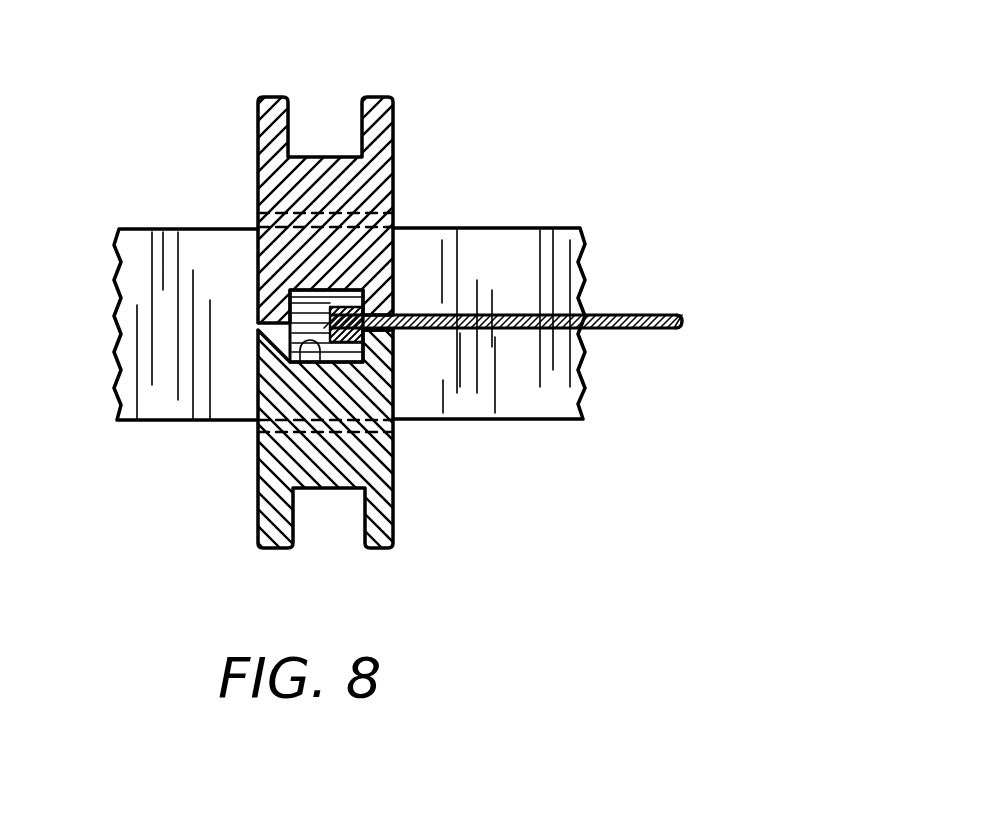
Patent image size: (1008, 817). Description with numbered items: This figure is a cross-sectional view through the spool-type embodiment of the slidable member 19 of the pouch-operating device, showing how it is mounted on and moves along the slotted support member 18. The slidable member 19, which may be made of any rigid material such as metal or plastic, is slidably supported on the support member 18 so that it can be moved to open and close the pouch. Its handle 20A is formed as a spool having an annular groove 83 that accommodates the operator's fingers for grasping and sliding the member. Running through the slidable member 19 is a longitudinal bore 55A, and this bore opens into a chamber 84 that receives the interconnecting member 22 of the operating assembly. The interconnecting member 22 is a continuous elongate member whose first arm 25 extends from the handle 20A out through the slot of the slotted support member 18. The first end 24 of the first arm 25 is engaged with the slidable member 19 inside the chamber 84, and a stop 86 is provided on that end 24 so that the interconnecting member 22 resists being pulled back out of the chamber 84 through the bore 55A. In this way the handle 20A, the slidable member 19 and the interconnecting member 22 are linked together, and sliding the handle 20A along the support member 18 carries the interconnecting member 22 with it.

The slotted support member 18 is at (552, 420).
The slidable member 19 is at (278, 188).
The handle 20A is at (383, 97).
The interconnecting member 22 is at (623, 315).
The first end 24 is at (352, 290).
The first arm 25 is at (653, 330).
The longitudinal bore 55A is at (370, 314).
The annular groove 83 is at (322, 490).
The chamber 84 is at (298, 362).
The stop 86 is at (397, 364).